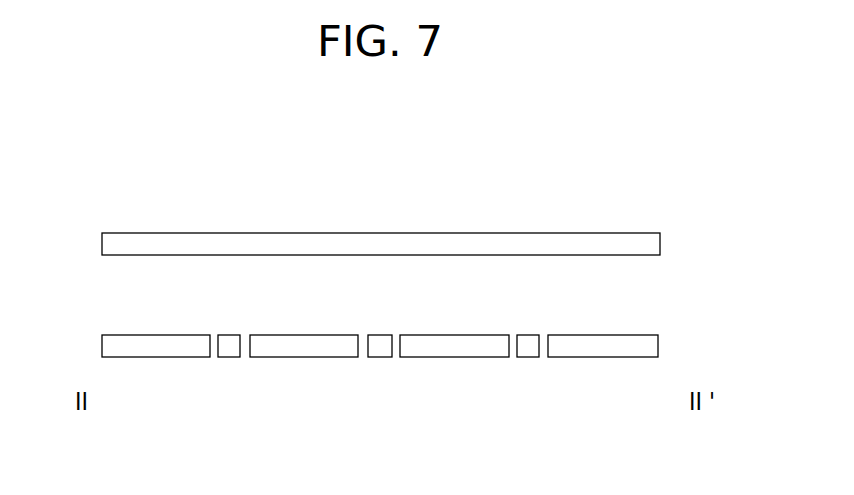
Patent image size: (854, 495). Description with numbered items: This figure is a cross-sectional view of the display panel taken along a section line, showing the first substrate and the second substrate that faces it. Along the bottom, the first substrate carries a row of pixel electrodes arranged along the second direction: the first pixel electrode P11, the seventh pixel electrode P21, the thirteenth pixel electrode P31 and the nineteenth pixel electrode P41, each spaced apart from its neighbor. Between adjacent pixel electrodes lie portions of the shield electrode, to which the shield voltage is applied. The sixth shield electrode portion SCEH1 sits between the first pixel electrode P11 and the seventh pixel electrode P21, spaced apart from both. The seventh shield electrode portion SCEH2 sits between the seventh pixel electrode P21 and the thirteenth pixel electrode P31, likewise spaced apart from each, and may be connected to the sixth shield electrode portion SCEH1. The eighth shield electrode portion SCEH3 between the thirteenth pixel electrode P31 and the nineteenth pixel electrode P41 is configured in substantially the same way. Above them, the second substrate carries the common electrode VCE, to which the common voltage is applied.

The common electrode VCE is at (457, 240).
The first pixel electrode P11 is at (164, 351).
The seventh pixel electrode P21 is at (312, 351).
The thirteenth pixel electrode P31 is at (462, 351).
The nineteenth pixel electrode P41 is at (612, 351).
The sixth shield electrode portion SCEH1 is at (228, 352).
The seventh shield electrode portion SCEH2 is at (378, 352).
The eighth shield electrode portion SCEH3 is at (528, 352).